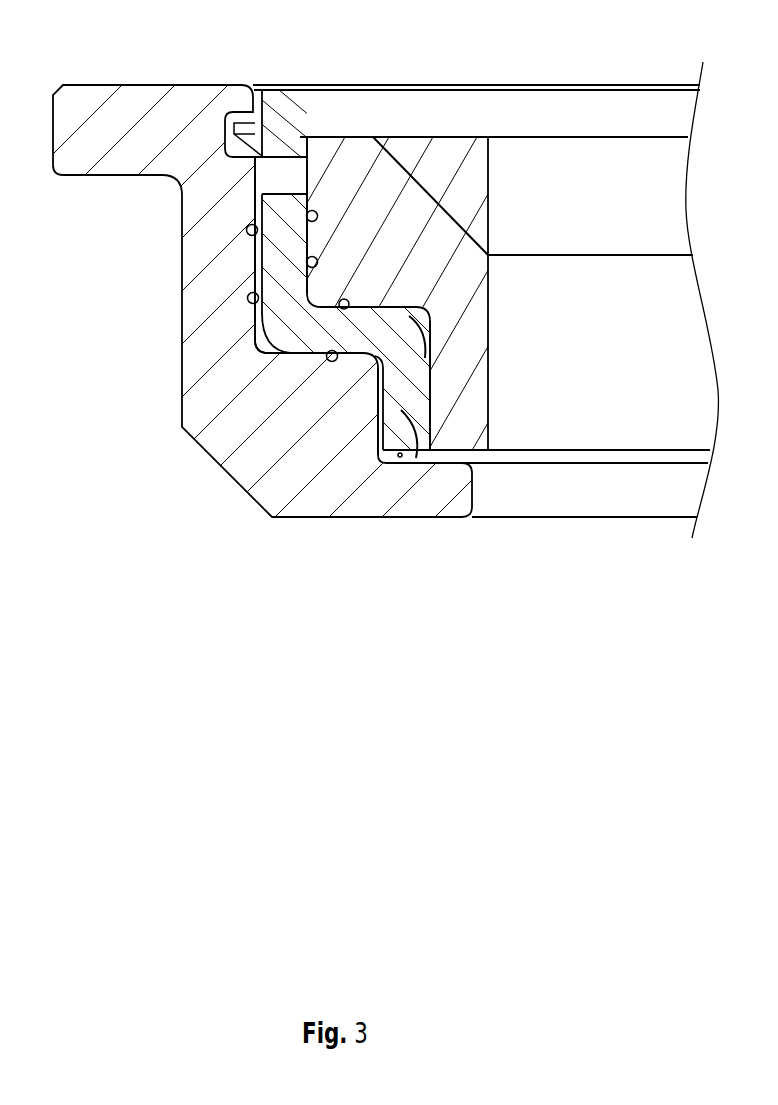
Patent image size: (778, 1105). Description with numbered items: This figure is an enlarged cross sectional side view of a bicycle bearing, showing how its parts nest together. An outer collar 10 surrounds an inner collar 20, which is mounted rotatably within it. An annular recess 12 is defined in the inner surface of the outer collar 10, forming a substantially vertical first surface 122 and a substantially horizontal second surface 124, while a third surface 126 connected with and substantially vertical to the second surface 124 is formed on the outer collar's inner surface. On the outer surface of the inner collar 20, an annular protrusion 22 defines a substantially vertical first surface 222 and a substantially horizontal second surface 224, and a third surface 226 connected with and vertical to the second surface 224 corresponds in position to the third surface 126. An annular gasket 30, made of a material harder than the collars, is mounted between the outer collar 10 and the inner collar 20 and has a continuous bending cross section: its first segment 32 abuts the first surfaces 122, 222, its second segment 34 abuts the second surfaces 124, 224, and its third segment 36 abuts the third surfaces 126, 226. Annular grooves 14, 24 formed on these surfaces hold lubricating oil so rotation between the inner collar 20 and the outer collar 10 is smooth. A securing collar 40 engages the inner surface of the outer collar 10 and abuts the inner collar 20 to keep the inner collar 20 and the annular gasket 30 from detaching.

The outer collar 10 is at (176, 454).
The annular recess 12 is at (272, 184).
The annular groove 14 is at (247, 229).
The first surface 122 is at (256, 262).
The second surface 124 is at (305, 363).
The third surface 126 is at (377, 368).
The inner collar 20 is at (538, 153).
The annular protrusion 22 is at (427, 265).
The first surface 222 is at (309, 184).
The second surface 224 is at (369, 303).
The third surface 226 is at (431, 383).
The annular groove 24 is at (314, 217).
The annular gasket 30 is at (400, 455).
The first segment 32 is at (264, 218).
The second segment 34 is at (338, 362).
The third segment 36 is at (403, 413).
The securing collar 40 is at (469, 88).